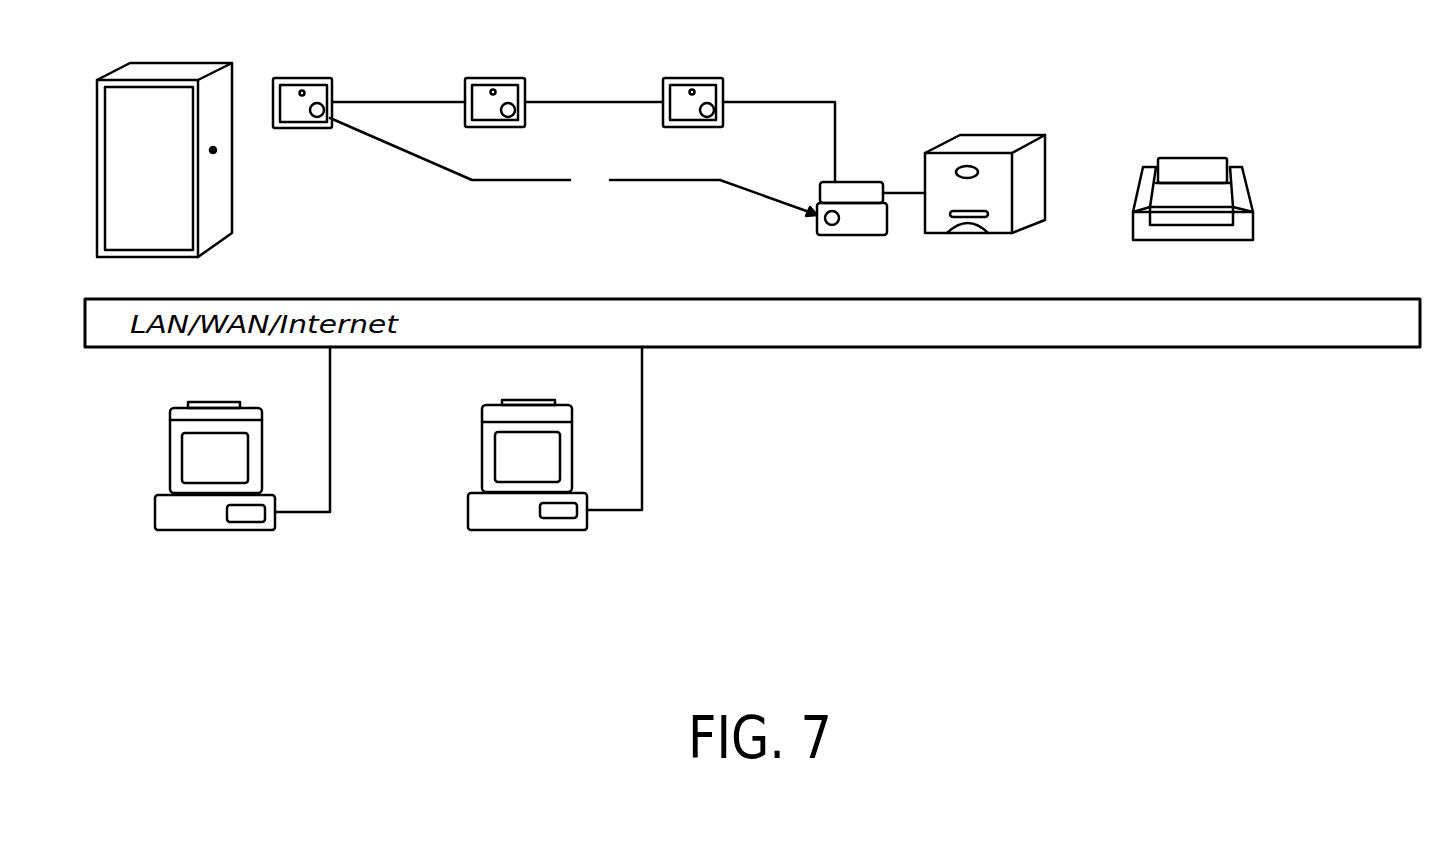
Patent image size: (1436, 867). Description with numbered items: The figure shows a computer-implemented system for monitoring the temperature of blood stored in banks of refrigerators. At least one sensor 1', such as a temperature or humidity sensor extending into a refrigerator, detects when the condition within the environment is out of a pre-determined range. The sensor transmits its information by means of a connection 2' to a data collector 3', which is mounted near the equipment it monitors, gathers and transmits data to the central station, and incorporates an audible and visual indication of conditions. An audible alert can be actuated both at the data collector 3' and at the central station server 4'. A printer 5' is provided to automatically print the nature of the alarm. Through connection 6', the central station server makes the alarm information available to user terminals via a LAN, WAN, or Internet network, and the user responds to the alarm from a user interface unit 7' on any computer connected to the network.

The sensor 1' is at (164, 160).
The connection 2' is at (254, 149).
The data collector 3' is at (554, 102).
The central station server 4' is at (627, 176).
The printer 5' is at (1149, 199).
The connection 6' is at (986, 217).
The user interface unit 7' is at (555, 438).